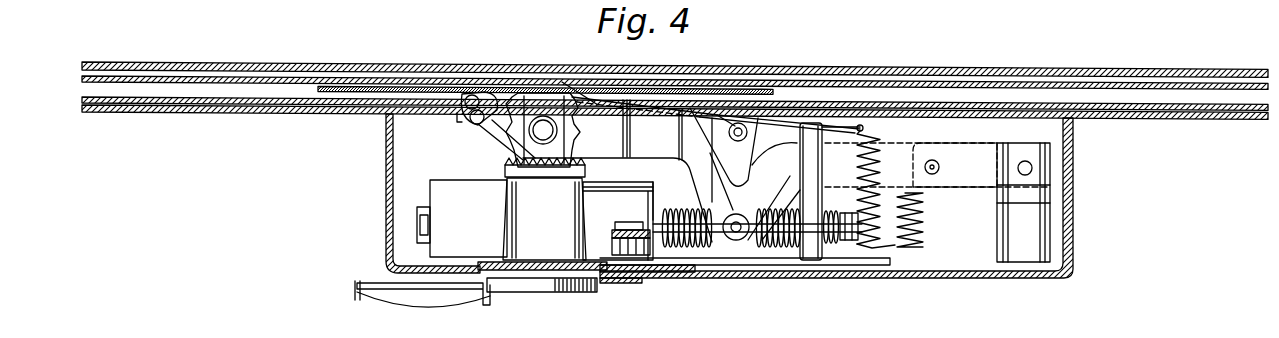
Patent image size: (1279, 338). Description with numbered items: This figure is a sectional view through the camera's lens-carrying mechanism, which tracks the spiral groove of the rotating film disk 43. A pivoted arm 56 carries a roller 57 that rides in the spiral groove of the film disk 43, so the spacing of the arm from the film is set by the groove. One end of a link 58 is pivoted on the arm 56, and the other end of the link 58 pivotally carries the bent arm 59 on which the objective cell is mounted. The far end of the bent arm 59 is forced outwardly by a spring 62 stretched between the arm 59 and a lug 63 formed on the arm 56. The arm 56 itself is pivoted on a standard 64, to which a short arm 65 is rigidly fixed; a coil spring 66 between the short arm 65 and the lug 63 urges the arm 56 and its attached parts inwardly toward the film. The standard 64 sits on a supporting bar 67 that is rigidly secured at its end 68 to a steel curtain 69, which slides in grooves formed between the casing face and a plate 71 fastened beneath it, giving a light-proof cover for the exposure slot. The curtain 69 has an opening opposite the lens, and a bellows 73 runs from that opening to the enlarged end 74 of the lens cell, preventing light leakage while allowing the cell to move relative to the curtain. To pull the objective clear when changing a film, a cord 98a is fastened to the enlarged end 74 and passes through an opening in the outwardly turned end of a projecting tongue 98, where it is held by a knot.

The film disk 43 is at (427, 90).
The pivoted arm 56 is at (660, 125).
The roller 57 is at (545, 100).
The link 58 is at (762, 128).
The bent arm 59 is at (716, 128).
The spring 62 is at (868, 190).
The lug 63 is at (895, 246).
The standard 64 is at (979, 235).
The short arm 65 is at (973, 152).
The coil spring 66 is at (916, 210).
The supporting bar 67 is at (887, 263).
The end of supporting bar 68 is at (580, 266).
The steel curtain 69 is at (630, 279).
The plate 71 is at (693, 277).
The bellows 73 is at (535, 219).
The enlarged end of cell 74 is at (510, 167).
The projecting tongue 98 is at (392, 289).
The cord 98a is at (450, 298).